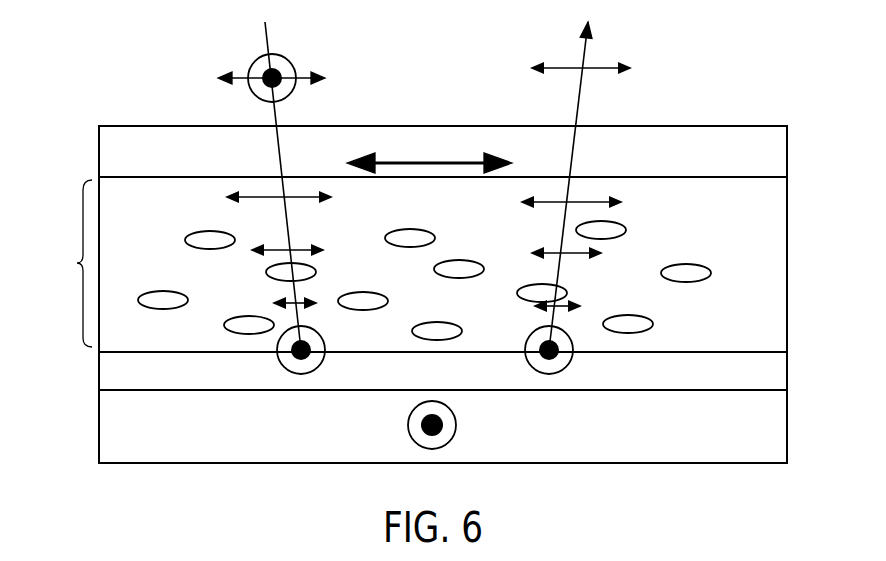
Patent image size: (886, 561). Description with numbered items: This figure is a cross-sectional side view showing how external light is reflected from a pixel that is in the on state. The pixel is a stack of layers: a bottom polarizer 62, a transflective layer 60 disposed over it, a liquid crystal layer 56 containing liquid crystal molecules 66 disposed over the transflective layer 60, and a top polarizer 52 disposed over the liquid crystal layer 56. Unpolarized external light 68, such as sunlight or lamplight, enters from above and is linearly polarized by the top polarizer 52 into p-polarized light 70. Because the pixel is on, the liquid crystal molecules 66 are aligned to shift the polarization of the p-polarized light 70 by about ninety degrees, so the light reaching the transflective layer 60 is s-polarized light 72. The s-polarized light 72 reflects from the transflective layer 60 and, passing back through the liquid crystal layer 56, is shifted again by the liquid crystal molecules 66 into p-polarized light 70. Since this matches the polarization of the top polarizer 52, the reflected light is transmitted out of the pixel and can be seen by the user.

The top polarizer 52 is at (98, 140).
The liquid crystal layer 56 is at (78, 263).
The transflective layer 60 is at (100, 368).
The bottom polarizer 62 is at (103, 431).
The liquid crystal molecules 66 is at (622, 227).
The external light 68 is at (257, 58).
The p-polarized light 70 is at (284, 188).
The s-polarized light 72 is at (272, 370).